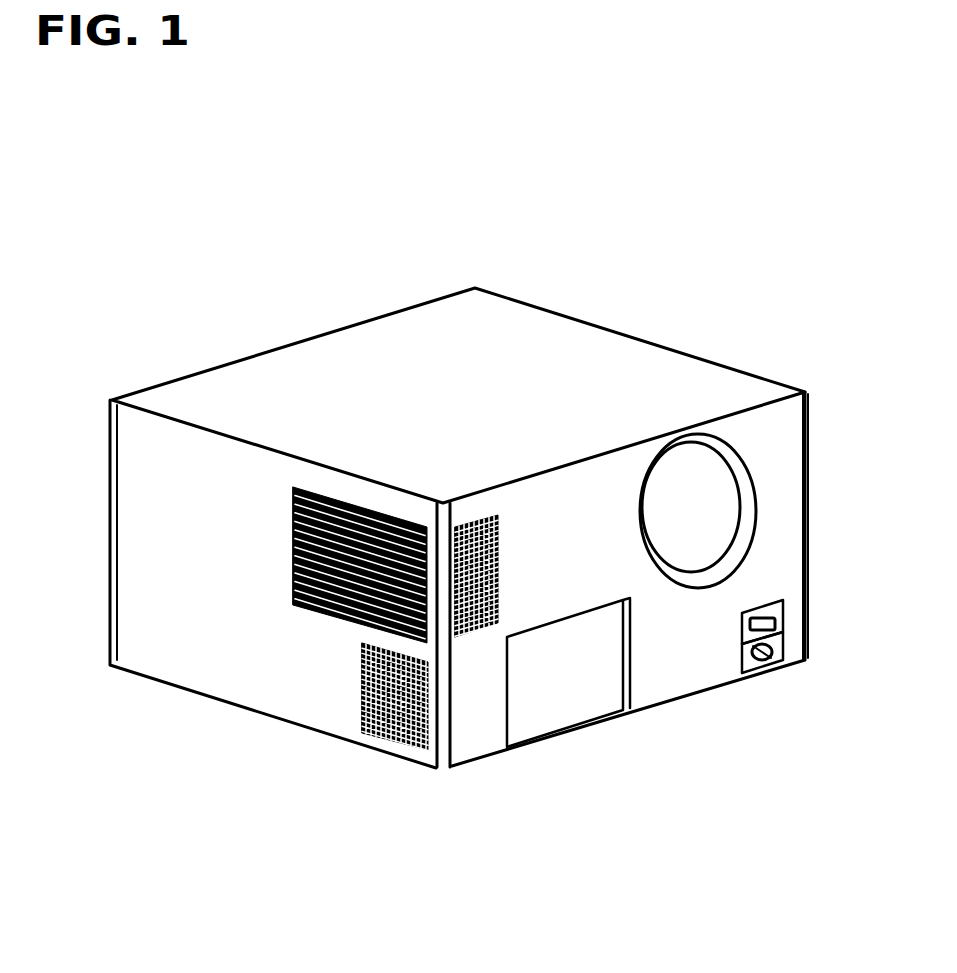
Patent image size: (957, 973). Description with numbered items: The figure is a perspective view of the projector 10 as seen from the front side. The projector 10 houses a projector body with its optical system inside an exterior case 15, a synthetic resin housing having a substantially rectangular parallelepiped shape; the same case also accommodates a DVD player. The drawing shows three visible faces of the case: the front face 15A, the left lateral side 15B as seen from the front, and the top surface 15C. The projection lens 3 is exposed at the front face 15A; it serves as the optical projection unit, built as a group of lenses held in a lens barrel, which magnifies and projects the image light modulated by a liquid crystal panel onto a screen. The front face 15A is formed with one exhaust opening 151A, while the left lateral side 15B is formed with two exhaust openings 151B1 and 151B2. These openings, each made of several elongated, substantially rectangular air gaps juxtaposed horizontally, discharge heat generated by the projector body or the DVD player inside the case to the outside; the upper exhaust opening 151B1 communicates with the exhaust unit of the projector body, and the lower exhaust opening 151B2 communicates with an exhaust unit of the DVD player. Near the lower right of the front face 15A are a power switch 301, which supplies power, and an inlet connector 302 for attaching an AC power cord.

The projector 10 is at (637, 307).
The exterior case 15 is at (459, 498).
The front face 15A is at (680, 673).
The left lateral side 15B is at (173, 648).
The top surface of housing 15C is at (246, 323).
The projection lens 3 is at (713, 500).
The exhaust opening 151A is at (478, 637).
The upper exhaust opening 151B1 is at (307, 608).
The lower exhaust opening 151B2 is at (371, 733).
The power switch 301 is at (783, 633).
The inlet connector 302 is at (783, 648).